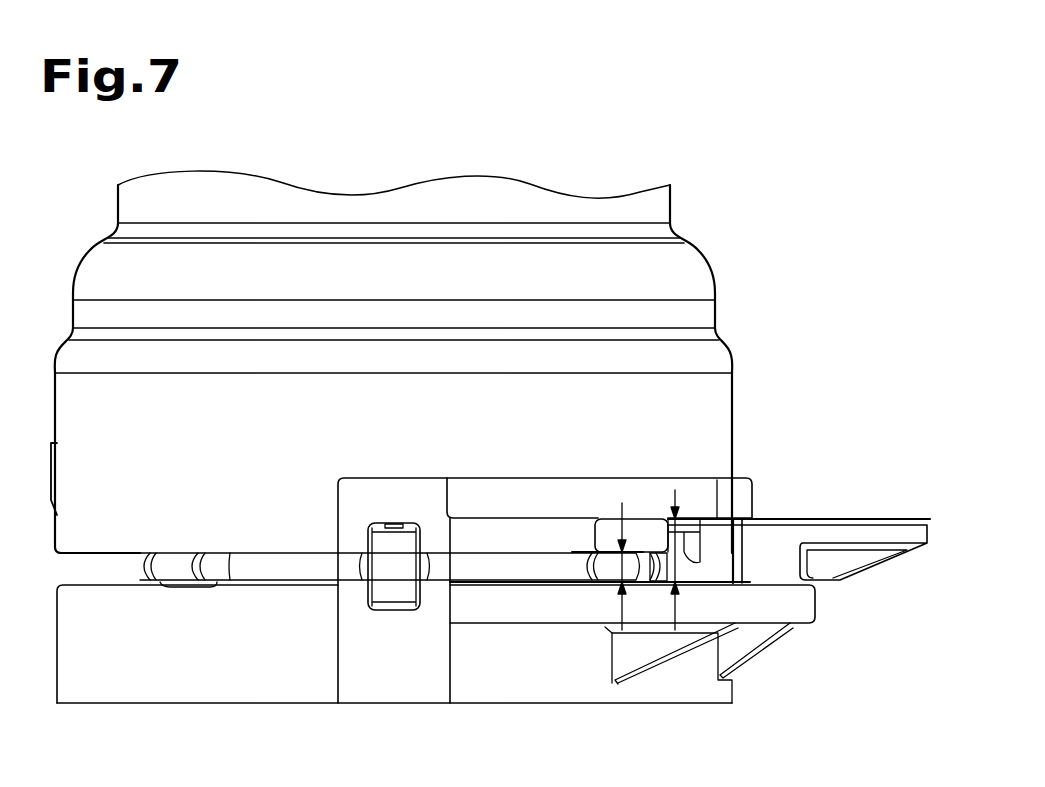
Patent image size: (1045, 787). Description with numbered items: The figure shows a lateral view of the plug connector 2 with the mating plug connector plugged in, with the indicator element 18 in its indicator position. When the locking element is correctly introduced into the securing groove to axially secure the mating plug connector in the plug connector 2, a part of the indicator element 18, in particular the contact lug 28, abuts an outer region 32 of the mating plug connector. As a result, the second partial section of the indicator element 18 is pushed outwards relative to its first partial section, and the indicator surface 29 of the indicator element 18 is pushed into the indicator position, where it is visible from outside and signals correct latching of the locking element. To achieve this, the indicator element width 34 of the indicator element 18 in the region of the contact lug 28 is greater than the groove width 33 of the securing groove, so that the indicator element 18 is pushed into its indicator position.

The plug connector 2 is at (688, 275).
The indicator element 18 is at (887, 457).
The contact lug 28 is at (687, 533).
The indicator surface 29 is at (873, 522).
The outer region 32 is at (643, 535).
The groove width 33 is at (612, 557).
The indicator element width 34 is at (663, 557).